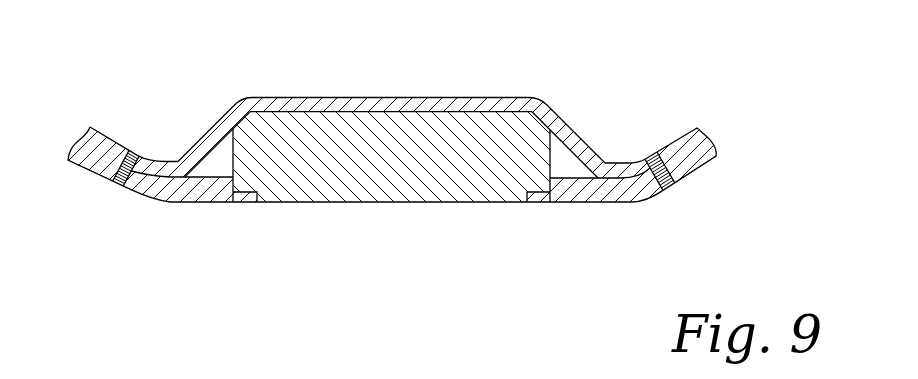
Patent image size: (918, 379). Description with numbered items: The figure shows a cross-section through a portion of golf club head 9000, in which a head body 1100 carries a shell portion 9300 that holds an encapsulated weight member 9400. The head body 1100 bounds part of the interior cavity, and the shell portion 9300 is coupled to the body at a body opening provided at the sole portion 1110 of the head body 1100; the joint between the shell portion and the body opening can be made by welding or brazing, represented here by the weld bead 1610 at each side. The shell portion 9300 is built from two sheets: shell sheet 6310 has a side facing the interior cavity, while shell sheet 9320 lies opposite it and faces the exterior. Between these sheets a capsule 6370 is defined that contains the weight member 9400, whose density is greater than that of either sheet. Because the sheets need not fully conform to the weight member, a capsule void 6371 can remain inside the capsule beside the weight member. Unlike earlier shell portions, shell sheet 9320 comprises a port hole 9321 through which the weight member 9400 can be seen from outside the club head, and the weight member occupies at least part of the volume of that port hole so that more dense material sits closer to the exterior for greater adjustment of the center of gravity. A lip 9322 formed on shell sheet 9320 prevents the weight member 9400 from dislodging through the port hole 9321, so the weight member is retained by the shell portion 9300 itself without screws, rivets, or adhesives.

The golf club head 9000 is at (677, 296).
The shell portion 9300 is at (565, 98).
The shell sheet 6310 is at (427, 96).
The capsule 6370 is at (218, 163).
The capsule void 6371 is at (571, 164).
The shell sheet 9320 is at (189, 201).
The port hole 9321 is at (462, 213).
The lip 9322 is at (535, 200).
The weight member 9400 is at (398, 187).
The sole portion 1110 is at (103, 142).
The head body 1100 is at (706, 134).
The weld bead 1610 is at (668, 187).